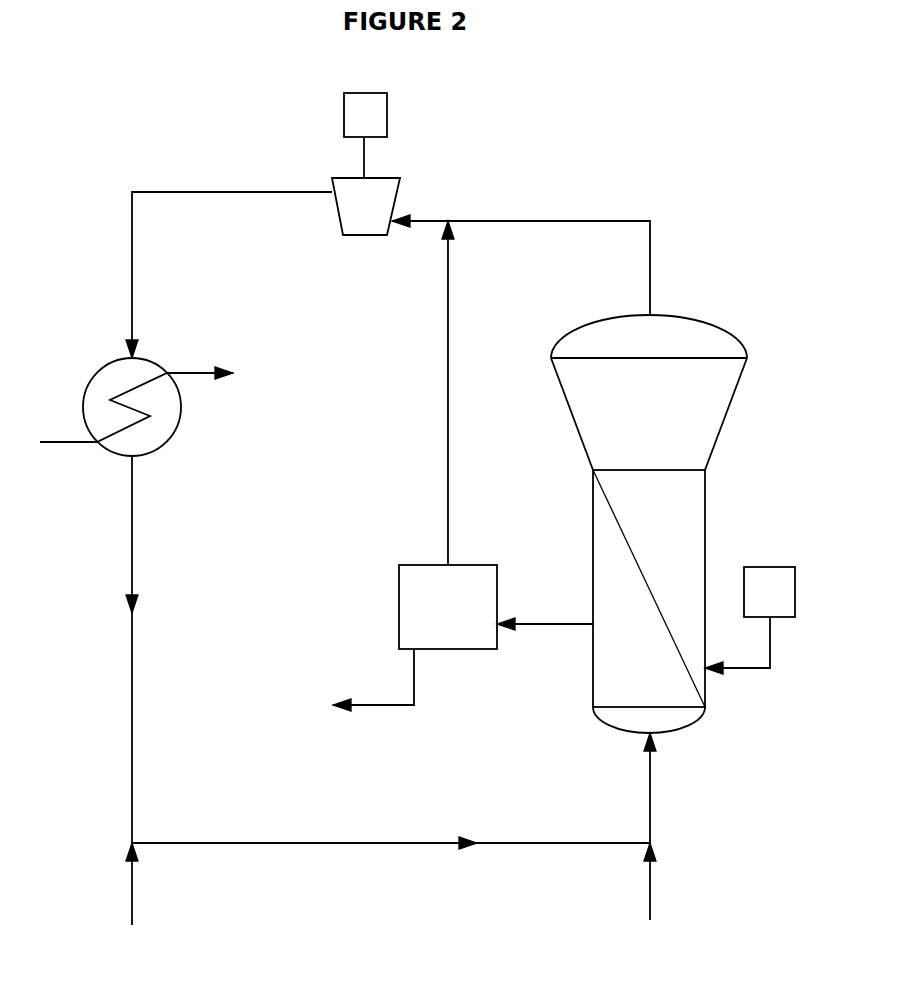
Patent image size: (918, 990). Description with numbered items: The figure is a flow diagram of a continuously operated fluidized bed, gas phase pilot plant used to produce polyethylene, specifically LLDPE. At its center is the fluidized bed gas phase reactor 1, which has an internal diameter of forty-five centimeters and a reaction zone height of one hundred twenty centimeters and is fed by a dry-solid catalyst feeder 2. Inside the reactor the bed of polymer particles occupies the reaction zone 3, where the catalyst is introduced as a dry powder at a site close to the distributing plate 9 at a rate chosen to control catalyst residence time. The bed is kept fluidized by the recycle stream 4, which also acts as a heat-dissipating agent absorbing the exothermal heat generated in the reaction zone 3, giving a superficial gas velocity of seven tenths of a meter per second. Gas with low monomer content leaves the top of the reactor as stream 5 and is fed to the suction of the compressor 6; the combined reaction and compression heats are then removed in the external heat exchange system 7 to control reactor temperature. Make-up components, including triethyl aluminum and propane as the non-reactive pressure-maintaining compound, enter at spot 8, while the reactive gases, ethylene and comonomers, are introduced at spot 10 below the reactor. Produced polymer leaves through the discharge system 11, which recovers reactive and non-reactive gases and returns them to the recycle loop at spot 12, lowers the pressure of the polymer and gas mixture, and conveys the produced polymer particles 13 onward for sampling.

The fluidized bed gas phase reactor 1 is at (705, 522).
The dry-solid catalyst feeder 2 is at (750, 620).
The reaction zone 3 is at (649, 588).
The recycle stream 4 is at (373, 844).
The stream of gas discharged from reactor 5 is at (563, 221).
The compressor 6 is at (332, 183).
The external heat exchange system 7 is at (85, 385).
The make-up stream 8 is at (131, 903).
The distributing plate 9 is at (677, 708).
The spot for reactive gas introduction 10 is at (655, 846).
The discharge system 11 is at (496, 607).
The spot for recycling recovered gases 12 is at (450, 222).
The produced polymer particles 13 is at (352, 684).